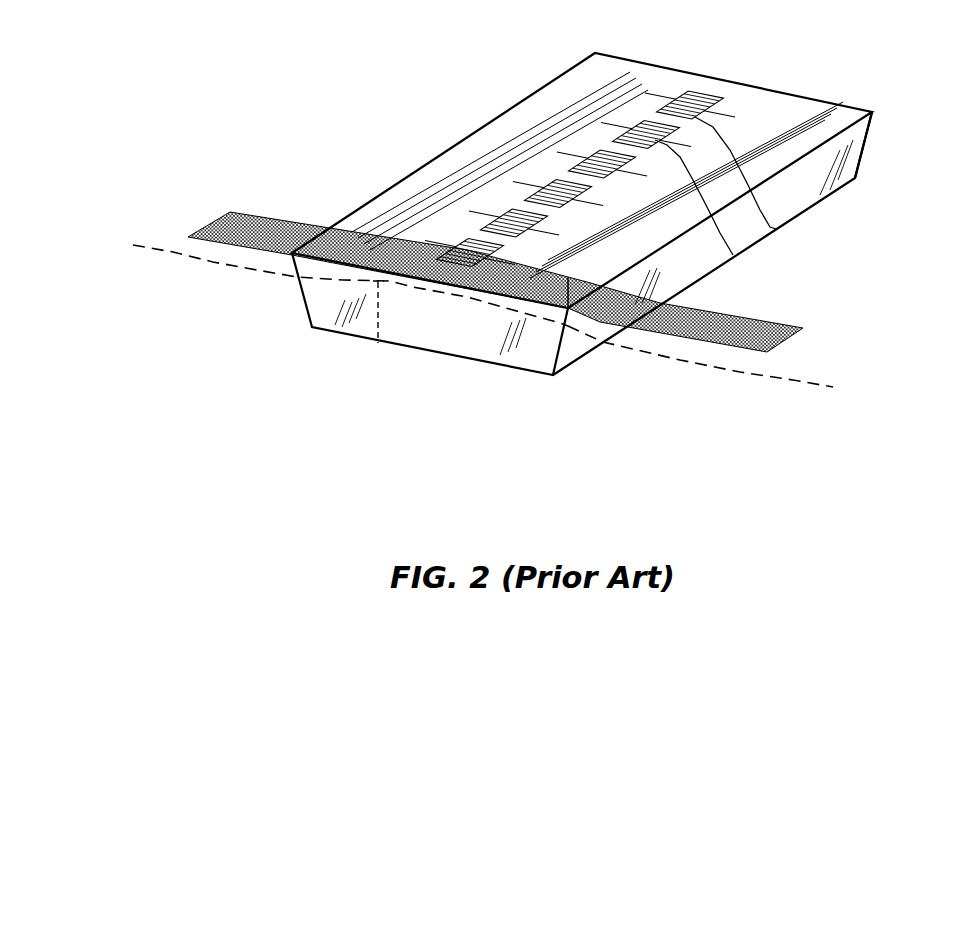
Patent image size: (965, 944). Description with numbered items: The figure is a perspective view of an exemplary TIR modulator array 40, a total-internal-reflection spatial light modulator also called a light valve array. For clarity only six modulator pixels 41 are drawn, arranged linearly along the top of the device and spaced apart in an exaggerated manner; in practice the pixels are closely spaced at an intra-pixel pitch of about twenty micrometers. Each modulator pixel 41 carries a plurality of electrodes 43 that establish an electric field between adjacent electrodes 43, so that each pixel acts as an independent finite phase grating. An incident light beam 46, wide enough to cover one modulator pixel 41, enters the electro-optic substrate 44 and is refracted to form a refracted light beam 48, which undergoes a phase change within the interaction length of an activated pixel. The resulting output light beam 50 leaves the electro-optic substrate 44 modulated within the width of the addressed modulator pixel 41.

The TIR modulator array 40 is at (800, 92).
The modulator pixel 41 is at (720, 88).
The electrode 43 is at (672, 92).
The electro-optic substrate 44 is at (866, 160).
The incident light beam 46 is at (255, 213).
The refracted light beam 48 is at (373, 348).
The output light beam 50 is at (773, 318).